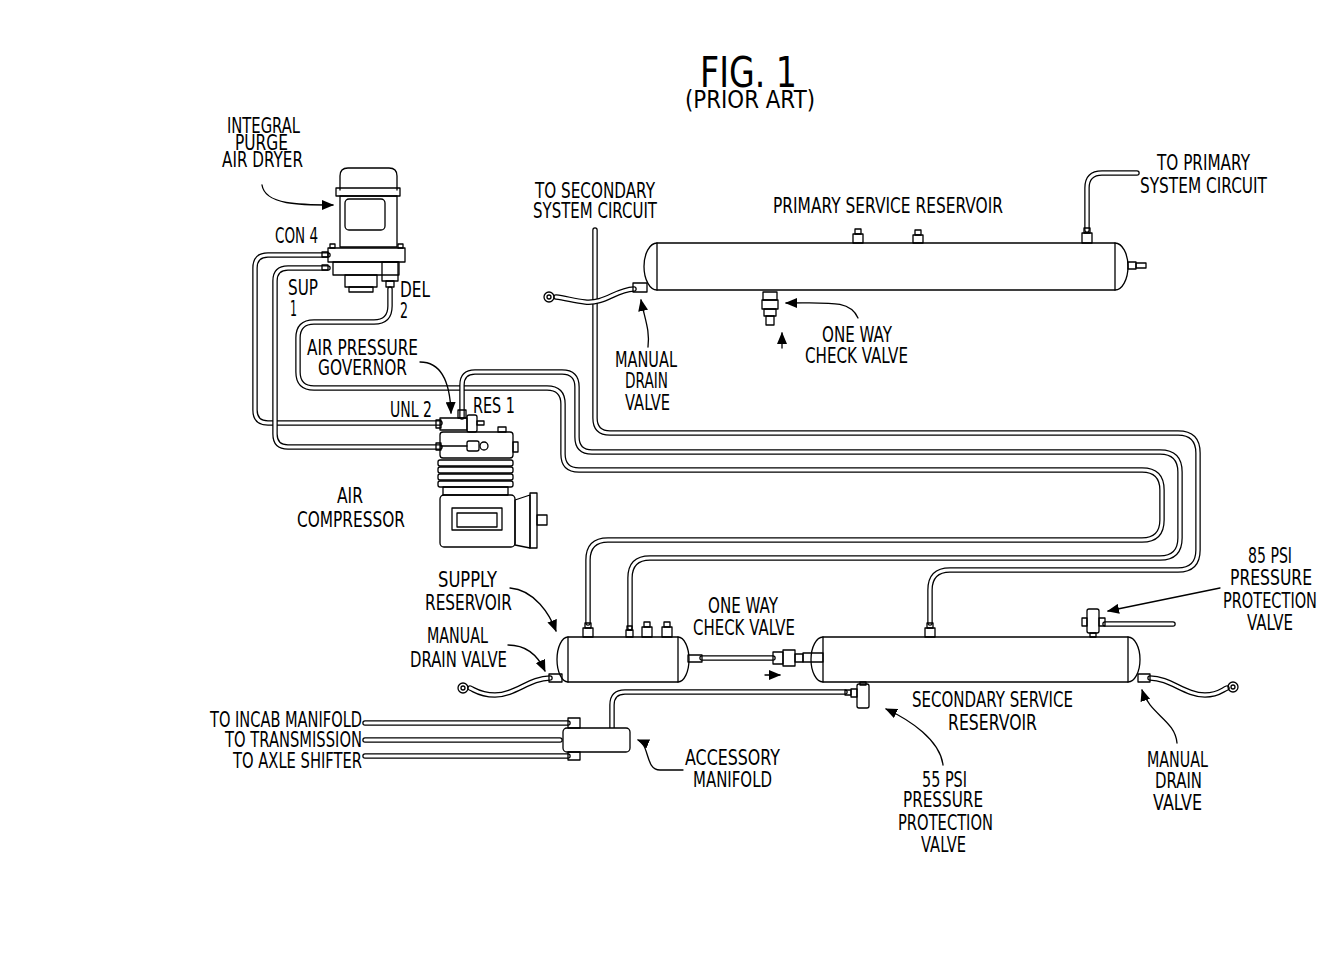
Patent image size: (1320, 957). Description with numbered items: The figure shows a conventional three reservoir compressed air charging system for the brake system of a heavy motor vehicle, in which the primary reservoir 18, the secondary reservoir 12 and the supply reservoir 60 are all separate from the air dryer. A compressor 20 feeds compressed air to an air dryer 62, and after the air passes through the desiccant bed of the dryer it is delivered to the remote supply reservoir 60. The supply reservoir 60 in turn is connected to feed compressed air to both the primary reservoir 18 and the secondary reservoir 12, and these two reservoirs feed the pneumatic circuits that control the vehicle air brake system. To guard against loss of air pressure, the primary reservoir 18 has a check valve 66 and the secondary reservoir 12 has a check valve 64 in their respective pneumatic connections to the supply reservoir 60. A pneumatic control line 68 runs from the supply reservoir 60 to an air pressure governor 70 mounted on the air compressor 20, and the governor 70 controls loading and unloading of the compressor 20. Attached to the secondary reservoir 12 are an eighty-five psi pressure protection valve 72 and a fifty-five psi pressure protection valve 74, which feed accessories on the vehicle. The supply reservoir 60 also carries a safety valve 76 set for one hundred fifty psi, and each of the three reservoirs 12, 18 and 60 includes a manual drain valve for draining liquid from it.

The secondary reservoir 12 is at (1105, 686).
The primary reservoir 18 is at (1085, 296).
The compressor 20 is at (436, 548).
The supply reservoir 60 is at (661, 689).
The air dryer 62 is at (402, 168).
The check valve 64 is at (804, 645).
The check valve 66 is at (757, 310).
The pneumatic control line 68 is at (547, 366).
The air pressure governor 70 is at (487, 422).
The 85 psi pressure protection valve 72 is at (1073, 624).
The 55 psi pressure protection valve 74 is at (855, 714).
The safety valve 76 is at (648, 604).